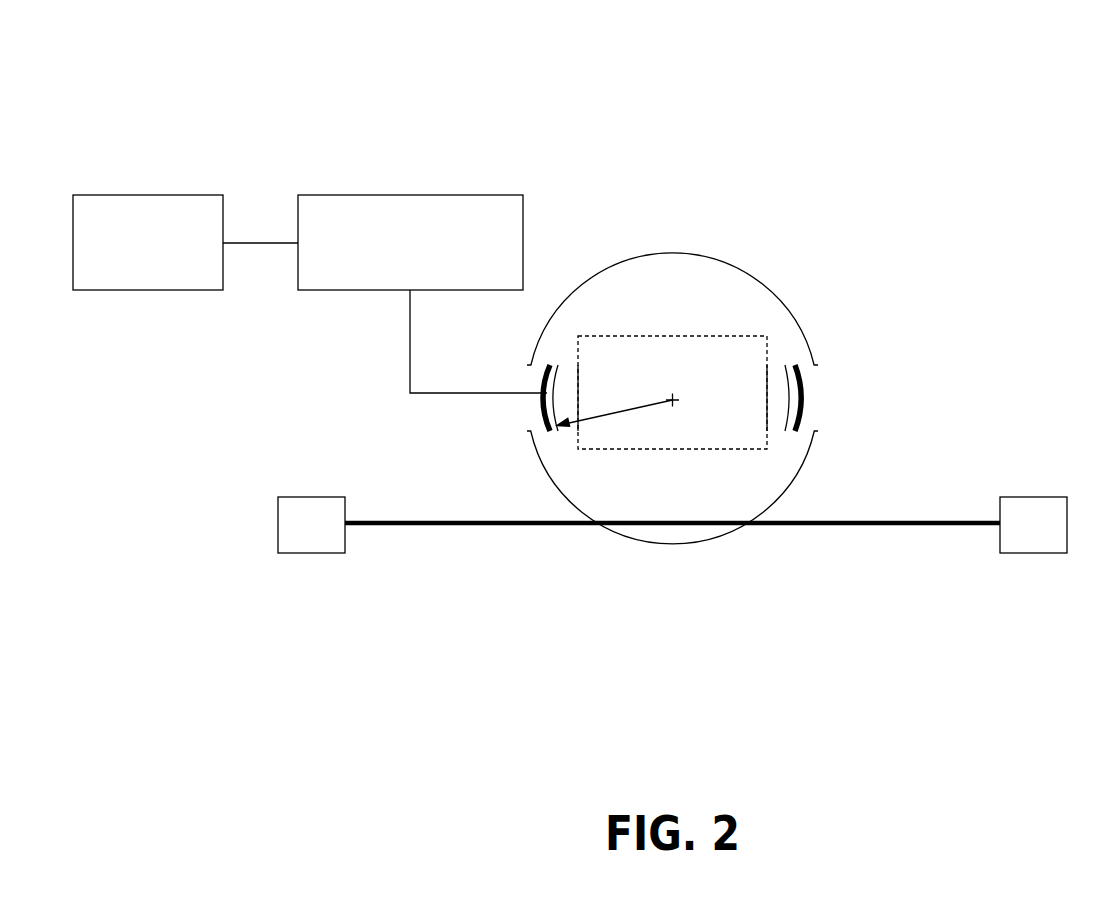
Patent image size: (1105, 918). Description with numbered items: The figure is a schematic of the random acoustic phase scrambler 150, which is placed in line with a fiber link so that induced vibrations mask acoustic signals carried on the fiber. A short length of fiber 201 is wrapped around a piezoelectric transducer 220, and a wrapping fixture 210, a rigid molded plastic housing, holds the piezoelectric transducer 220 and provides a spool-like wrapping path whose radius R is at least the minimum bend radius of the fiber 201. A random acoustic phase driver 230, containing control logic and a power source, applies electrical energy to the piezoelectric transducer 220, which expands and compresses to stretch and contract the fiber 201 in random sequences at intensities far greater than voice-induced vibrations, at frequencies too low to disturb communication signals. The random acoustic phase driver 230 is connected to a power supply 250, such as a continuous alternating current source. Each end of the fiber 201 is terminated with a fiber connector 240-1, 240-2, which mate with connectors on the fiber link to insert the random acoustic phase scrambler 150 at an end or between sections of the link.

The random acoustic phase scrambler 150 is at (990, 56).
The fiber 201 is at (805, 383).
The wrapping fixture 210 is at (782, 297).
The piezoelectric transducer 220 is at (767, 412).
The random acoustic phase driver 230 is at (422, 294).
The fiber connector 240-1 is at (310, 553).
The fiber connector 240-2 is at (1036, 553).
The power supply 250 is at (185, 242).